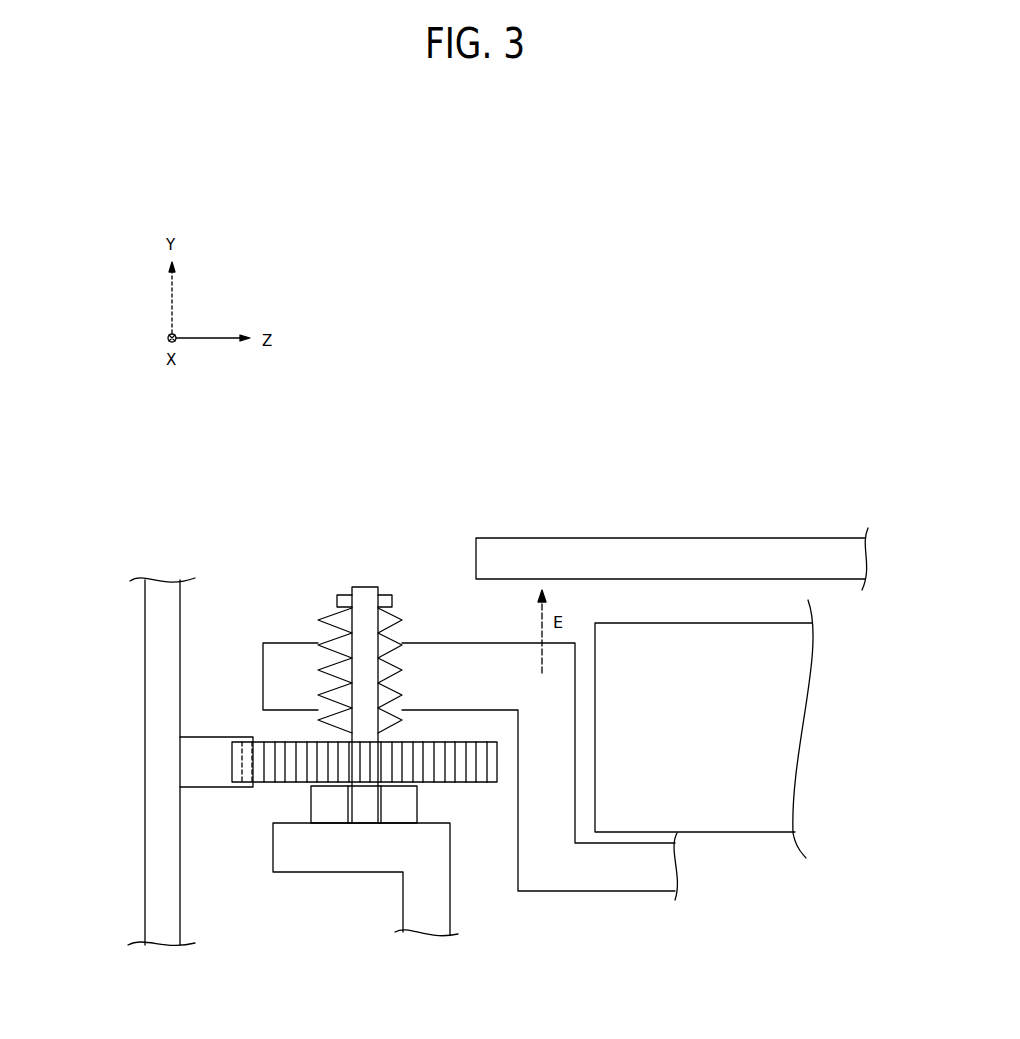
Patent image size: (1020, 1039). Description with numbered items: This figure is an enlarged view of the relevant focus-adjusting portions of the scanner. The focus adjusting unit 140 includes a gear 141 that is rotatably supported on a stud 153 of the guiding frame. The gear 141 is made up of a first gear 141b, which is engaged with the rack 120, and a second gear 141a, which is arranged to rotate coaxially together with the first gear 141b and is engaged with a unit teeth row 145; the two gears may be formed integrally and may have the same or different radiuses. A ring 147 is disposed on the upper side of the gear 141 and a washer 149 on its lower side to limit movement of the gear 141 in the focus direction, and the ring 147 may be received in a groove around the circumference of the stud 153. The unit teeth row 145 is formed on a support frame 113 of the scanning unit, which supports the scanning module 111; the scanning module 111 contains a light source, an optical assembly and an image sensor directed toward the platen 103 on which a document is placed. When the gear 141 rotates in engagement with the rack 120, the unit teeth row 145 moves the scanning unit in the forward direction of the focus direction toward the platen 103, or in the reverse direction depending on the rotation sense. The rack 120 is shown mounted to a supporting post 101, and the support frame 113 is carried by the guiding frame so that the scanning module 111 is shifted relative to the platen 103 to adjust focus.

The support post 101 is at (148, 839).
The platen 103 is at (718, 540).
The scanning module 111 is at (733, 820).
The support frame 113 is at (607, 882).
The rack 120 is at (193, 757).
The focus adjusting unit 140 is at (443, 428).
The gear 141 is at (480, 467).
The second gear 141a is at (388, 597).
The first gear 141b is at (484, 757).
The unit teeth row 145 is at (323, 655).
The ring 147 is at (340, 597).
The washer 149 is at (323, 813).
The stud 153 is at (362, 720).